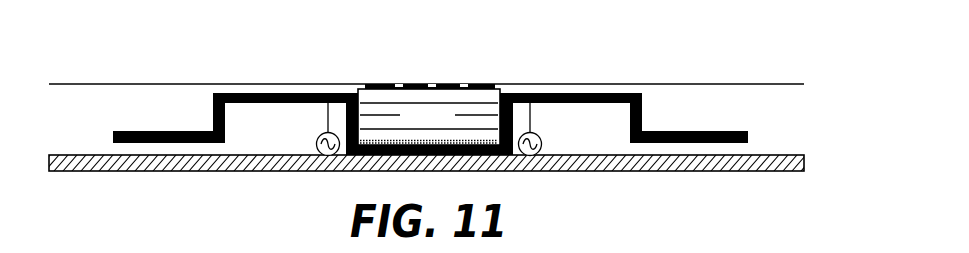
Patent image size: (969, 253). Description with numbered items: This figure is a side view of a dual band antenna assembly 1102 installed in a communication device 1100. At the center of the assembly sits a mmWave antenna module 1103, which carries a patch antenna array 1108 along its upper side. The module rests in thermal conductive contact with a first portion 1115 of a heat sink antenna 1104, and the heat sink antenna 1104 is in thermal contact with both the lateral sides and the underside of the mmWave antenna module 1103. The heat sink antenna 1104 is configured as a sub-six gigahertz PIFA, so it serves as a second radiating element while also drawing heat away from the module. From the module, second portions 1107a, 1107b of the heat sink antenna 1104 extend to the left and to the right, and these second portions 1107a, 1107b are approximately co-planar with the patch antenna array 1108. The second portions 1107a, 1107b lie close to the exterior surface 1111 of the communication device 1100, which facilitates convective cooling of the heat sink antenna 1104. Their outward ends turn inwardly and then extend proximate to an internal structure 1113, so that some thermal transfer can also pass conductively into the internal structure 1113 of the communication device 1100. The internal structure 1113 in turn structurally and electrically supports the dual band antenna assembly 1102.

The communication device 1100 is at (216, 50).
The dual band antenna assembly 1102 is at (333, 72).
The mmWave antenna module 1103 is at (450, 124).
The heat sink antenna 1104 is at (205, 93).
The second portion 1107a is at (215, 140).
The second portion 1107b is at (642, 144).
The patch antenna array 1108 is at (468, 66).
The exterior surface 1111 is at (573, 83).
The internal structure 1113 is at (523, 172).
The first portion 1115 is at (390, 155).